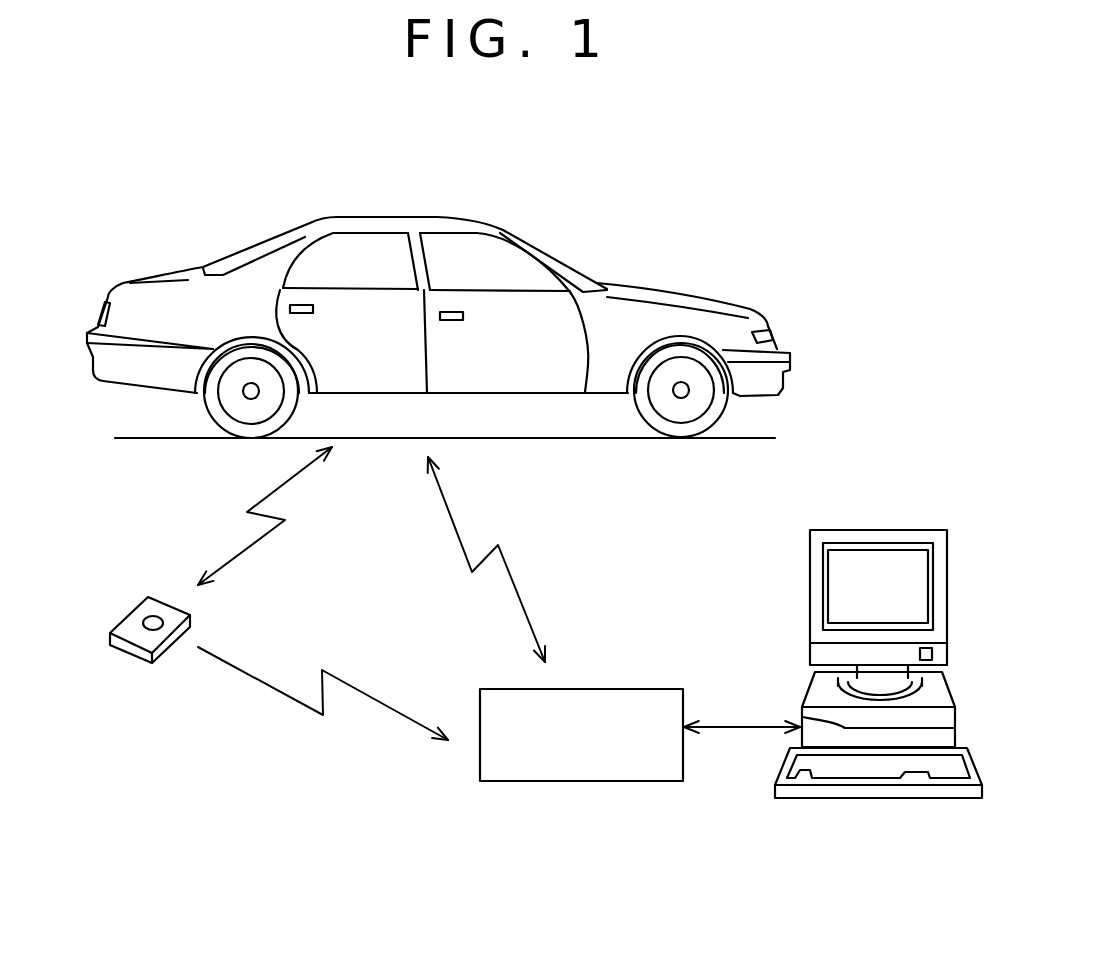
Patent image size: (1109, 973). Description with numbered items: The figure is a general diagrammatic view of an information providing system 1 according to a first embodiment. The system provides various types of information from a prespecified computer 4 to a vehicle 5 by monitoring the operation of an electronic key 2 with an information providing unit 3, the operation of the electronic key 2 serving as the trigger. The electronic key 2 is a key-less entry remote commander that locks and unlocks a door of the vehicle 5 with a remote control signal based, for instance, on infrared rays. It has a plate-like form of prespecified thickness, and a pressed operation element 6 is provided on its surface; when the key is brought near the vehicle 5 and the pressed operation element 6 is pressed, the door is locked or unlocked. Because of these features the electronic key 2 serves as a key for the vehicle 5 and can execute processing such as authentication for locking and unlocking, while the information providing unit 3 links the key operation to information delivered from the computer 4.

The information providing system 1 is at (133, 757).
The electronic key 2 is at (138, 640).
The information providing unit 3 is at (570, 689).
The computer 4 is at (878, 530).
The vehicle 5 is at (465, 222).
The pressed operation element 6 is at (160, 620).